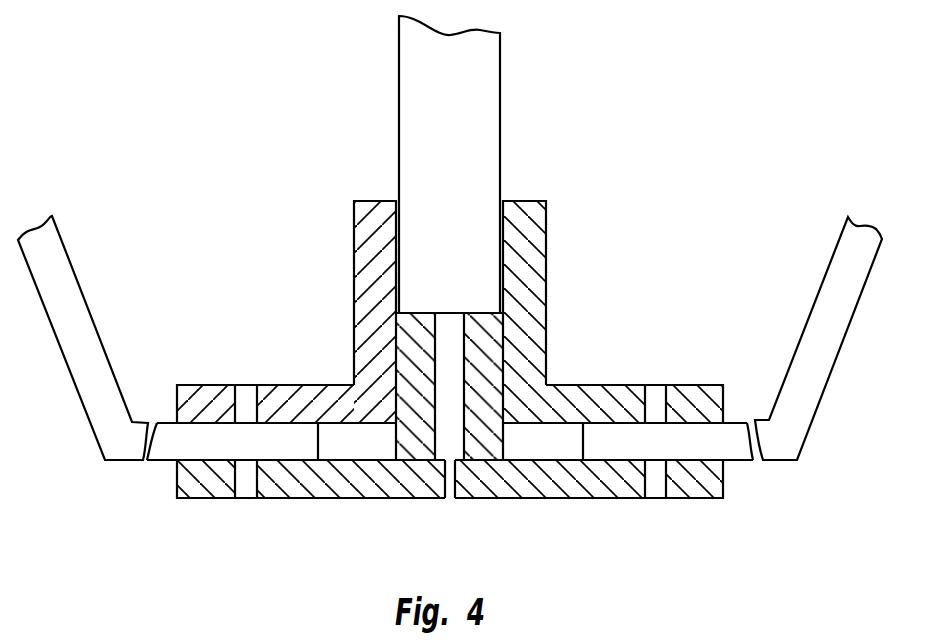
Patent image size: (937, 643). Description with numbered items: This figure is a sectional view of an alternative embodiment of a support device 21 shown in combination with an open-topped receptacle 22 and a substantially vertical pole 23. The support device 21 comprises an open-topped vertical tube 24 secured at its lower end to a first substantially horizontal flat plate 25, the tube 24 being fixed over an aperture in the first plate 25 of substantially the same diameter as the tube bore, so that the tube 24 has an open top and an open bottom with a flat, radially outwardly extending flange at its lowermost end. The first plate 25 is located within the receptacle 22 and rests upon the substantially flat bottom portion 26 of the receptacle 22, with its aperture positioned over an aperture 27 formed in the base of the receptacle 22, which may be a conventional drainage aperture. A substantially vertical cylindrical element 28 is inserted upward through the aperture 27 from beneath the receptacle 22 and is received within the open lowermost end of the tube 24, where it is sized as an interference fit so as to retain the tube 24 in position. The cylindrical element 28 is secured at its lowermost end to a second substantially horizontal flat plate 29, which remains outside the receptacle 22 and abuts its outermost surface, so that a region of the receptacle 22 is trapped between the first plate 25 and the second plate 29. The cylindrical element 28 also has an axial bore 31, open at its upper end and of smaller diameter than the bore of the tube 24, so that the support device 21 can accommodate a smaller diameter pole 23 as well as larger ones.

The support device 21 is at (450, 379).
The open-topped receptacle 22 is at (840, 252).
The pole 23 is at (480, 157).
The open-topped tube 24 is at (367, 241).
The first plate 25 is at (213, 395).
The bottom portion 26 is at (722, 445).
The aperture 27 is at (558, 450).
The cylindrical element 28 is at (492, 350).
The second plate 29 is at (205, 499).
The axial bore 31 is at (447, 448).